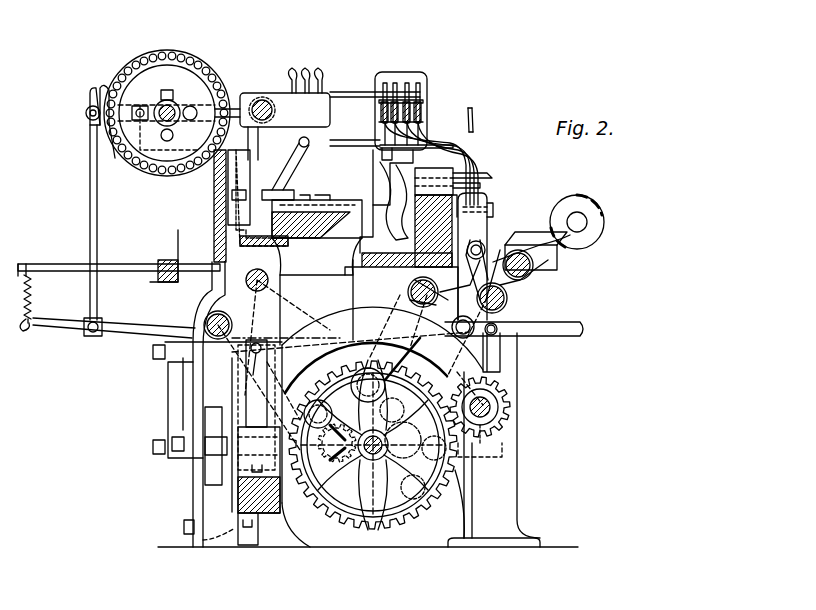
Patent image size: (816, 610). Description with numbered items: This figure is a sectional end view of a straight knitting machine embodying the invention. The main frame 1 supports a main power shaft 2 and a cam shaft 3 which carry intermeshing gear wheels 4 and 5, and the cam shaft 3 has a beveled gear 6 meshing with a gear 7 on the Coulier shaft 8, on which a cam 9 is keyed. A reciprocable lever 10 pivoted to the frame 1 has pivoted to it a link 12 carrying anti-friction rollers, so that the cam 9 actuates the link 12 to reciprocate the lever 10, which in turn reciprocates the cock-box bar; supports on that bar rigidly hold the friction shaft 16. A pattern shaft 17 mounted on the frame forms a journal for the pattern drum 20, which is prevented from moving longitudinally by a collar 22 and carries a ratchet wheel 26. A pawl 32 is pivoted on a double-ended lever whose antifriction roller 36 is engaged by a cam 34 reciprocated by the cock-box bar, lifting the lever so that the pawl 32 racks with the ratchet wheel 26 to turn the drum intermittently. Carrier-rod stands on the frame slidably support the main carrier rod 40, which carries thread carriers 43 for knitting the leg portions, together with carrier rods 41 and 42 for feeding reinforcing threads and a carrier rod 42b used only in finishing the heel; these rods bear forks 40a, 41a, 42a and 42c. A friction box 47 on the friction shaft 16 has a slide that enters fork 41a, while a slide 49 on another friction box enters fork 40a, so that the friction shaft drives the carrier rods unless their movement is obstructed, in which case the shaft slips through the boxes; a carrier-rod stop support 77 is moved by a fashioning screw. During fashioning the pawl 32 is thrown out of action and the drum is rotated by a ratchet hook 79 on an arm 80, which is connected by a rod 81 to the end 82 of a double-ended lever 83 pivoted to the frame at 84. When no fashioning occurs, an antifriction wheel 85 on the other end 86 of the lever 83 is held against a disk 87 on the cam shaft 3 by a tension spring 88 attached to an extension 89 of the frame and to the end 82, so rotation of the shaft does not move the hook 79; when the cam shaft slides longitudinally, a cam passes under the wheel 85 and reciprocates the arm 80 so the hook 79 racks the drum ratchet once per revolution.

The main frame 1 is at (302, 482).
The main power shaft 2 is at (492, 410).
The cam shaft 3 is at (362, 475).
The gear wheel 4 is at (515, 424).
The gear wheel 5 is at (438, 510).
The beveled gear 6 is at (383, 475).
The gear 7 is at (323, 512).
The Coulier shaft 8 is at (364, 445).
The cam 9 is at (210, 479).
The reciprocable lever 10 is at (196, 399).
The link 12 is at (184, 446).
The friction shaft 16 is at (272, 111).
The pattern shaft 17 is at (142, 105).
The pattern drum 20 is at (192, 54).
The collar 22 is at (178, 104).
The ratchet wheel 26 is at (155, 54).
The pawl 32 is at (251, 206).
The cam 34 is at (290, 192).
The antifriction roller 36 is at (272, 160).
The main carrier rod 40 is at (421, 100).
The fork 40a is at (420, 85).
The carrier rod 41 is at (410, 83).
The fork 41a is at (421, 82).
The carrier rod 42 is at (383, 124).
The fork 42a is at (396, 83).
The carrier rod 42b is at (381, 104).
The fork 42c is at (383, 89).
The thread carriers 43 is at (476, 143).
The friction box 47 is at (272, 93).
The slide 49 is at (474, 110).
The carrier-rod stop support 77 is at (380, 74).
The ratchet hook 79 is at (88, 136).
The arm 80 is at (109, 150).
The rod 81 is at (98, 222).
The lever end 82 is at (68, 336).
The double-ended lever 83 is at (158, 327).
The pivot 84 is at (256, 405).
The antifriction wheel 85 is at (455, 330).
The lever end 86 is at (358, 350).
The disk 87 is at (400, 408).
The tension spring 88 is at (34, 295).
The frame extension 89 is at (60, 266).